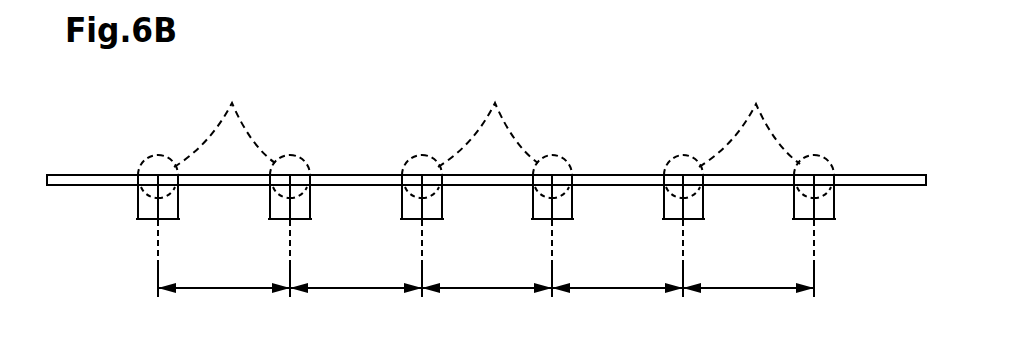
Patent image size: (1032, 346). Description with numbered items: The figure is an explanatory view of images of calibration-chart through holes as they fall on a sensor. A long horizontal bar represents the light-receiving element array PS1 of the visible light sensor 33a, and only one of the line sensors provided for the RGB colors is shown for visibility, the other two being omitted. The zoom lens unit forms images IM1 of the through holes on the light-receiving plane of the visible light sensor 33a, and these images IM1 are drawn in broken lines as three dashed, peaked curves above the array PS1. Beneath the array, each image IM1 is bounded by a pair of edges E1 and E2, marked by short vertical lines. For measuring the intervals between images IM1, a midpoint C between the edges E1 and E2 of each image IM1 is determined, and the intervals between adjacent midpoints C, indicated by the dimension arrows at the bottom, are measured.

The image of through hole IM1 is at (487, 120).
The light-receiving element array PS1 is at (857, 175).
The visible light sensor 33a is at (486, 119).
The edge E1 is at (463, 207).
The edge E2 is at (511, 207).
The midpoint C is at (486, 256).